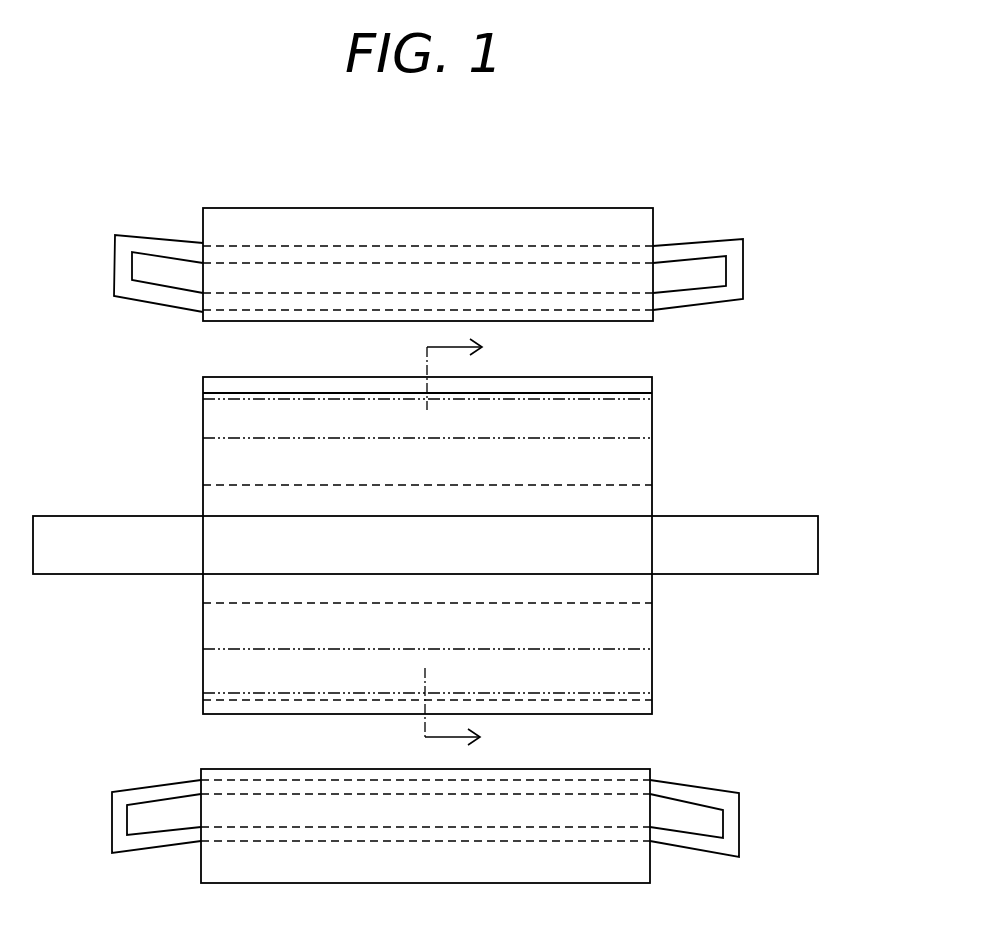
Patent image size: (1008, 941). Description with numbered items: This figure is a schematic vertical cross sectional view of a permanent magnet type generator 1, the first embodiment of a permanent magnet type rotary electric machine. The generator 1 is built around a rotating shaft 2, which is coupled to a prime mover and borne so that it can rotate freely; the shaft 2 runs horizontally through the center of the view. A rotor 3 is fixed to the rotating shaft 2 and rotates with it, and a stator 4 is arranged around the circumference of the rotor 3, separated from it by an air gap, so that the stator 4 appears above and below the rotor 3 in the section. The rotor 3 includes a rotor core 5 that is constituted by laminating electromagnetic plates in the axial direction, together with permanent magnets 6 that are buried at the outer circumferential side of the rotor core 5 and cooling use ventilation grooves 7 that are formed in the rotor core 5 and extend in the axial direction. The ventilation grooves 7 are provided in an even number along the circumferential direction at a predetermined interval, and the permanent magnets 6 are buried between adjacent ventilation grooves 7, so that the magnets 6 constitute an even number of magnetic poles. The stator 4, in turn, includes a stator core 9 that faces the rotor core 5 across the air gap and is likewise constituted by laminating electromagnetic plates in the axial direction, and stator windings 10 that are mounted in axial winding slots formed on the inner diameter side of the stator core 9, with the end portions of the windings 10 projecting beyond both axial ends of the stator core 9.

The permanent magnet type generator 1 is at (327, 159).
The rotating shaft 2 is at (88, 565).
The rotor 3 is at (510, 544).
The stator 4 is at (512, 252).
The rotor core 5 is at (652, 465).
The permanent magnets 6 is at (652, 418).
The cooling use ventilation grooves 7 is at (620, 603).
The stator core 9 is at (653, 226).
The stator windings 10 is at (487, 273).